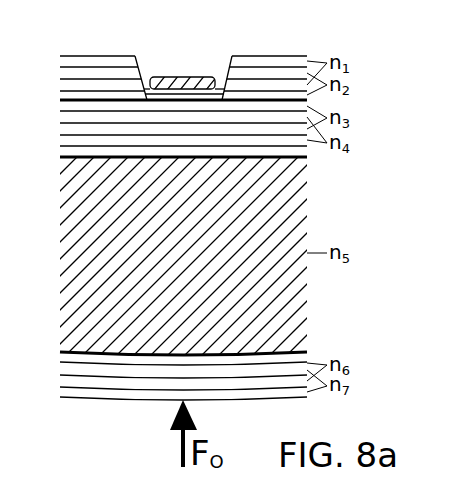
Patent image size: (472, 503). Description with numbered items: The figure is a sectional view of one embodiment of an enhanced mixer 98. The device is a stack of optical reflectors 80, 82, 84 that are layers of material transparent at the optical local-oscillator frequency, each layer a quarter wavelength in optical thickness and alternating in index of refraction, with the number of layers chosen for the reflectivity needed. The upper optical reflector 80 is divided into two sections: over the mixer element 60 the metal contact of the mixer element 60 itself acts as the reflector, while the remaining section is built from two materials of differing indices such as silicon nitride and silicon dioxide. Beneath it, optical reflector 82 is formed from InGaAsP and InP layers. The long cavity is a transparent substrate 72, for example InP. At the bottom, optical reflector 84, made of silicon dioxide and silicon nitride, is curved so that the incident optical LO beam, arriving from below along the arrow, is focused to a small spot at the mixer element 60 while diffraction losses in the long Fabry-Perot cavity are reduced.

The enhanced mixer 98 is at (48, 53).
The optical reflector 80 is at (58, 55).
The mixer element 60 is at (158, 67).
The optical reflector 82 is at (58, 102).
The transparent substrate 72 is at (58, 158).
The optical reflector 84 is at (58, 357).